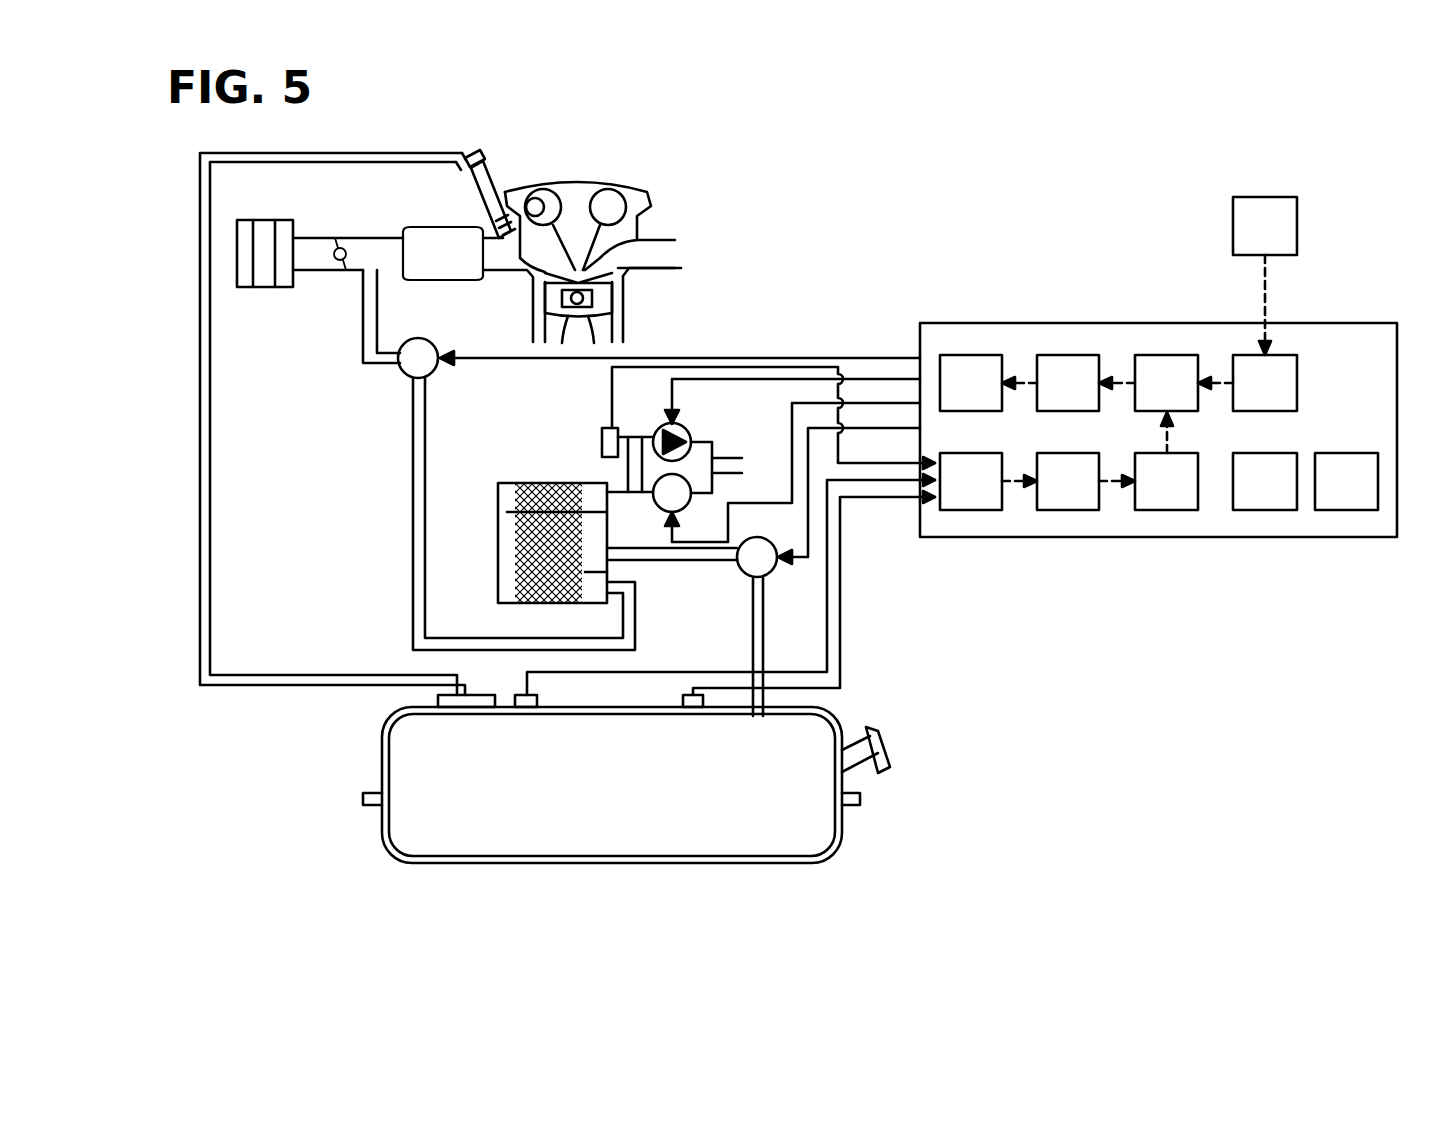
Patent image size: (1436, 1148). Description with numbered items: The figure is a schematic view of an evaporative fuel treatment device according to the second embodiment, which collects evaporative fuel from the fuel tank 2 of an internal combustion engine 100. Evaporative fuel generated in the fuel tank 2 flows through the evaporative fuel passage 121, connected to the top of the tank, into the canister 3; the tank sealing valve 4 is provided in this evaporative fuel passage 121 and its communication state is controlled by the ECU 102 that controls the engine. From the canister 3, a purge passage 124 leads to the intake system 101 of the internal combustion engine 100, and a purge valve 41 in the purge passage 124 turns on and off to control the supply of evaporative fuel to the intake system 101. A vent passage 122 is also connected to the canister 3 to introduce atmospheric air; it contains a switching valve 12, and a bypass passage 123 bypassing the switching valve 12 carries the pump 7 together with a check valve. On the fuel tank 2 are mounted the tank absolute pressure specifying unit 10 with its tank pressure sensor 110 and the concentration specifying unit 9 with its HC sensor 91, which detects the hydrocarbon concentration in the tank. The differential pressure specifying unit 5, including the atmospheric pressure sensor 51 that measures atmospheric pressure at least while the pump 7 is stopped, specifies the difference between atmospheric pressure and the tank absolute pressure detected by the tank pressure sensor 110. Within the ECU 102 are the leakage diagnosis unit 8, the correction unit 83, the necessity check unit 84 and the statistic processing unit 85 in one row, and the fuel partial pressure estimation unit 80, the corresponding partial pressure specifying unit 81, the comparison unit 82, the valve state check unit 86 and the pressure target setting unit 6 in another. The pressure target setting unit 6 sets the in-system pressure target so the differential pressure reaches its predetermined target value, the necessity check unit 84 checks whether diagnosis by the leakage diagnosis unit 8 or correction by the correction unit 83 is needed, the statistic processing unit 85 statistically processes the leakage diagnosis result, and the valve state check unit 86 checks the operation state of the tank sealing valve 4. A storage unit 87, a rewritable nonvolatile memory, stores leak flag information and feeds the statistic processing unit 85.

The fuel tank 2 is at (697, 863).
The canister 3 is at (500, 492).
The tank sealing valve 4 is at (746, 570).
The differential pressure specifying unit 5 is at (717, 418).
The atmospheric pressure sensor 51 is at (602, 443).
The pressure target setting unit 6 is at (1340, 512).
The pump 7 is at (692, 433).
The leakage diagnosis unit 8 is at (972, 355).
The concentration specifying unit 9 is at (792, 599).
The HC sensor 91 is at (690, 692).
The tank absolute pressure specifying unit 10 is at (567, 430).
The tank pressure sensor 110 is at (495, 677).
The switching valve 12 is at (692, 493).
The purge valve 41 is at (432, 345).
The fuel partial pressure estimation unit 80 is at (965, 512).
The corresponding partial pressure specifying unit 81 is at (1070, 512).
The comparison unit 82 is at (1170, 512).
The correction unit 83 is at (1076, 355).
The necessity check unit 84 is at (1166, 355).
The statistic processing unit 85 is at (1285, 355).
The valve state check unit 86 is at (1263, 512).
The storage unit 87 is at (1233, 232).
The internal combustion engine 100 is at (577, 187).
The intake system 101 is at (365, 250).
The ECU 102 is at (1353, 323).
The evaporative fuel passage 121 is at (758, 612).
The vent passage 122 is at (620, 490).
The bypass passage 123 is at (640, 432).
The purge passage 124 is at (413, 545).